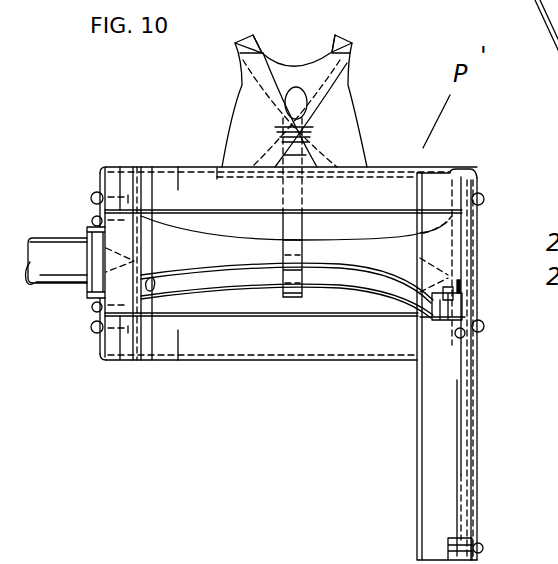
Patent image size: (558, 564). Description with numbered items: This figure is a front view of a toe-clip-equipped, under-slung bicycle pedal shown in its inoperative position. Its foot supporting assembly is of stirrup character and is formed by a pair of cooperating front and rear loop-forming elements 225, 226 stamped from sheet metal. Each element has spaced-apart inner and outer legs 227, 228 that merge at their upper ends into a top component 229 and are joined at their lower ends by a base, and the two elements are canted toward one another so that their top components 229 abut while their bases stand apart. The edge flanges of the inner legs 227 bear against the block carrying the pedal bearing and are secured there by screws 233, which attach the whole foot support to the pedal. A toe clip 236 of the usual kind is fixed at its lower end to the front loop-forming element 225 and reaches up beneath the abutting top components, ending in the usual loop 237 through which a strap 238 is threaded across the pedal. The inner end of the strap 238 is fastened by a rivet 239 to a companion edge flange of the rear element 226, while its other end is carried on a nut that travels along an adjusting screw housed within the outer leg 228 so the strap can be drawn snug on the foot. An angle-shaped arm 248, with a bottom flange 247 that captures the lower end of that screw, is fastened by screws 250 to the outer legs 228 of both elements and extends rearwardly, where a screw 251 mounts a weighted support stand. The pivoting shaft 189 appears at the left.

The shaft 189 is at (65, 278).
The front loop-forming element 225 is at (170, 167).
The rear loop-forming element 226 is at (218, 362).
The inner leg 227 is at (92, 309).
The outer leg 228 is at (477, 232).
The top component 229 is at (391, 238).
The screws 233 is at (92, 221).
The toe clip 236 is at (342, 82).
The loop 237 is at (298, 299).
The strap 238 is at (360, 290).
The rivet 239 is at (154, 285).
The bottom flange 247 is at (423, 478).
The arm 248 is at (475, 438).
The screws 250 is at (484, 199).
The screw 251 is at (484, 548).